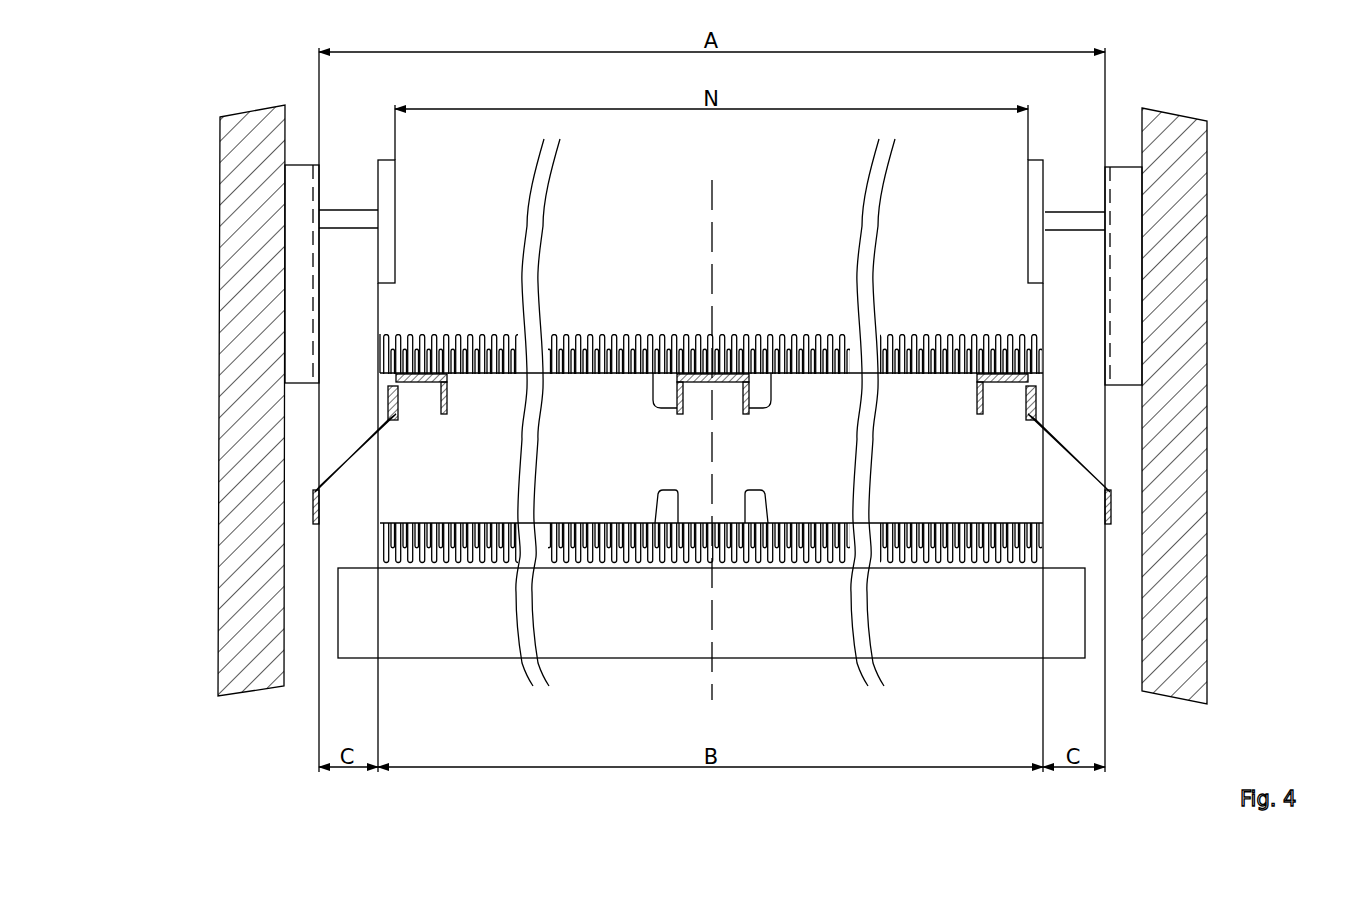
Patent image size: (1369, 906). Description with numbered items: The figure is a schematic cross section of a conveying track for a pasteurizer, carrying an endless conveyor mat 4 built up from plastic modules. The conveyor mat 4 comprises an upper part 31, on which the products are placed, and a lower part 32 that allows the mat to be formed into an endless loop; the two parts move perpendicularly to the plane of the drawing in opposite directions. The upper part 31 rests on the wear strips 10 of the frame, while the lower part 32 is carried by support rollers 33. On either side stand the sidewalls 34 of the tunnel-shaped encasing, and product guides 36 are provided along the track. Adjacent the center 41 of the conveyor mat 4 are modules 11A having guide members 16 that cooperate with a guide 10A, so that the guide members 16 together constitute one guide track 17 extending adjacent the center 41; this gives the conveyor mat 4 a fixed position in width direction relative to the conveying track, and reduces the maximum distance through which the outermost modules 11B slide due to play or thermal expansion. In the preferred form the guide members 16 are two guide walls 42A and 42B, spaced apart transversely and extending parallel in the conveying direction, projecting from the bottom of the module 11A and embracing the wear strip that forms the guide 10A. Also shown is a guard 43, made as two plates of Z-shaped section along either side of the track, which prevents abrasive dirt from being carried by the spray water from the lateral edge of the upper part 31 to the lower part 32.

The conveyor mat 4 is at (497, 407).
The wear strip 10 is at (447, 398).
The guide 10A is at (725, 387).
The module 11A is at (740, 372).
The outermost module 11B is at (405, 365).
The guide member 16 is at (670, 395).
The guide track 17 is at (680, 428).
The upper part 31 is at (1013, 357).
The lower part 32 is at (975, 550).
The support roller 33 is at (1030, 632).
The sidewall 34 is at (242, 155).
The product guide 36 is at (388, 266).
The center 41 is at (718, 322).
The guide wall 42A is at (677, 384).
The guide wall 42B is at (752, 392).
The guard 43 is at (328, 472).